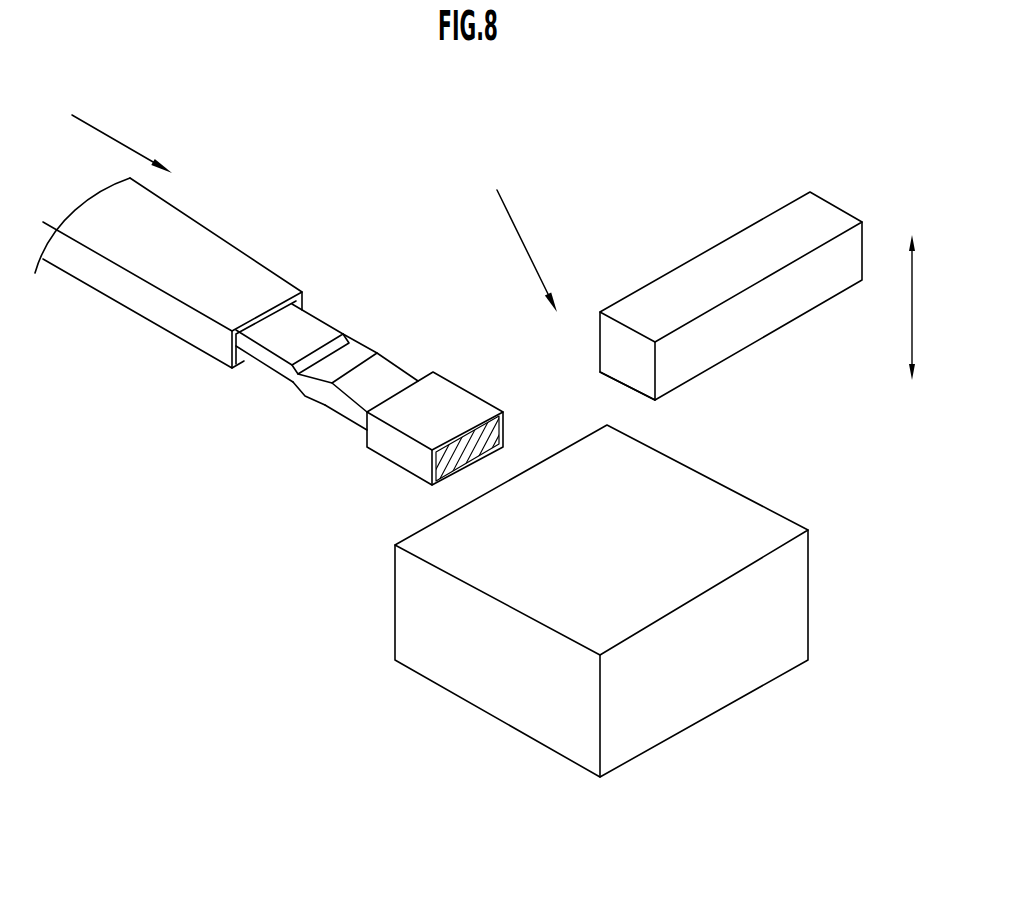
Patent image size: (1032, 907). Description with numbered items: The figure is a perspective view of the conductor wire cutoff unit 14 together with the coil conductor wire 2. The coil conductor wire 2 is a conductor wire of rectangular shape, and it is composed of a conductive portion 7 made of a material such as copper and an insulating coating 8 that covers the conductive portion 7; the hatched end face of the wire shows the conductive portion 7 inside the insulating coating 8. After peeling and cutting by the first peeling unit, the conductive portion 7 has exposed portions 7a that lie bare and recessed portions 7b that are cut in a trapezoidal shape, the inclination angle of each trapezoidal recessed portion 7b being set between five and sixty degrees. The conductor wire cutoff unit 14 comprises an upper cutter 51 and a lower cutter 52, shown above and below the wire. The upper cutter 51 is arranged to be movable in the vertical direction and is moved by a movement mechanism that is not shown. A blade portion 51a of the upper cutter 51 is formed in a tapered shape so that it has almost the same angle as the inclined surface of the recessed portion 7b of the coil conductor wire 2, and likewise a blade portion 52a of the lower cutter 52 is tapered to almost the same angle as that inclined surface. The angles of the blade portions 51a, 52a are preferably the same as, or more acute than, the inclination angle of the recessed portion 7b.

The coil conductor wire 2 is at (290, 343).
The conductive portion 7 is at (389, 355).
The exposed portion 7a is at (314, 316).
The recessed portion 7b is at (352, 357).
The insulating coating 8 is at (205, 247).
The conductor wire cutoff unit 14 is at (521, 234).
The upper cutter 51 is at (697, 290).
The blade portion 51a is at (608, 376).
The lower cutter 52 is at (601, 614).
The blade portion 52a is at (604, 680).